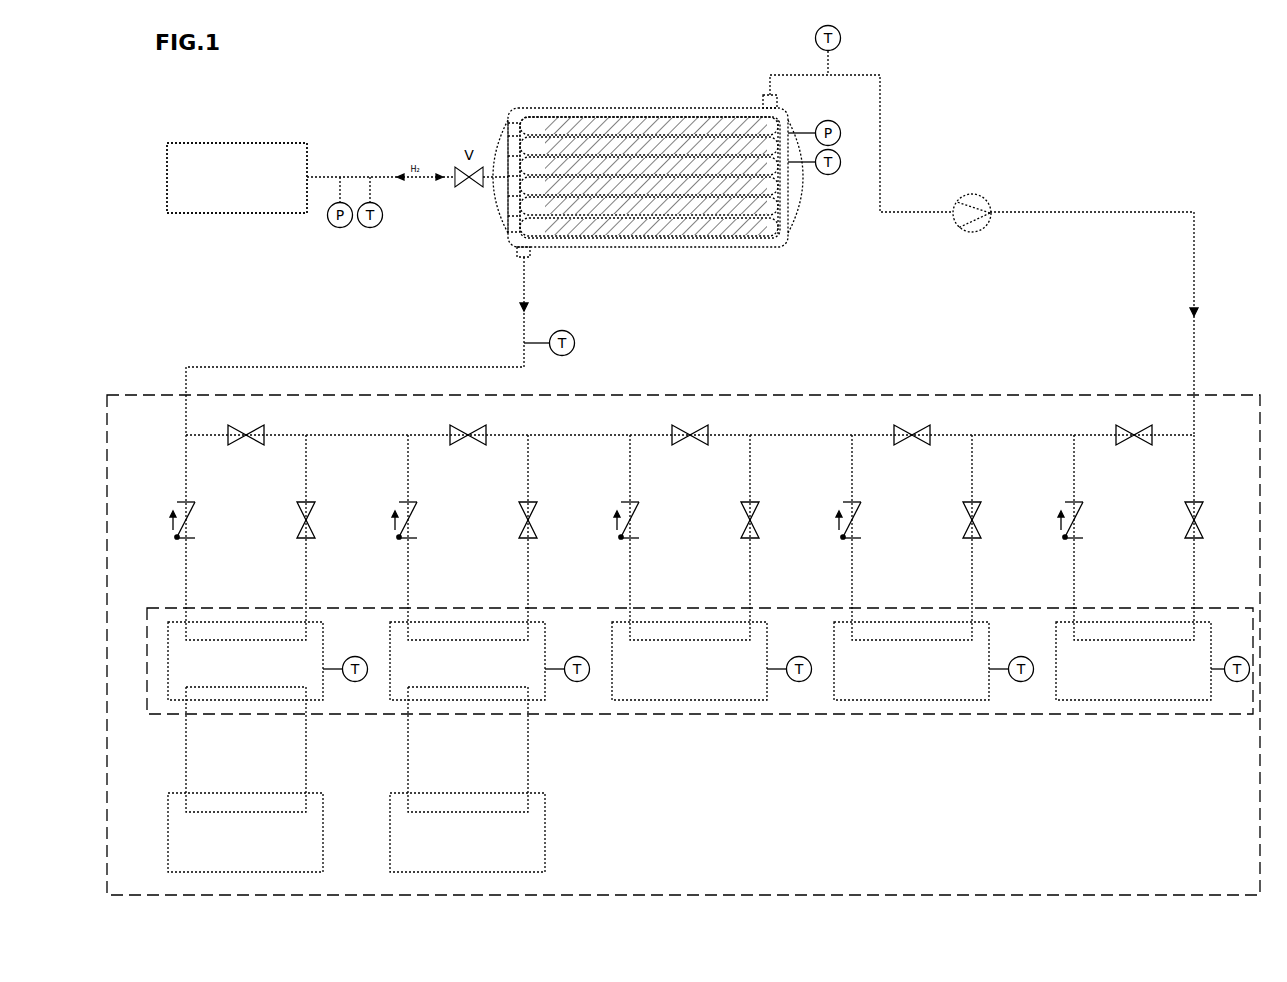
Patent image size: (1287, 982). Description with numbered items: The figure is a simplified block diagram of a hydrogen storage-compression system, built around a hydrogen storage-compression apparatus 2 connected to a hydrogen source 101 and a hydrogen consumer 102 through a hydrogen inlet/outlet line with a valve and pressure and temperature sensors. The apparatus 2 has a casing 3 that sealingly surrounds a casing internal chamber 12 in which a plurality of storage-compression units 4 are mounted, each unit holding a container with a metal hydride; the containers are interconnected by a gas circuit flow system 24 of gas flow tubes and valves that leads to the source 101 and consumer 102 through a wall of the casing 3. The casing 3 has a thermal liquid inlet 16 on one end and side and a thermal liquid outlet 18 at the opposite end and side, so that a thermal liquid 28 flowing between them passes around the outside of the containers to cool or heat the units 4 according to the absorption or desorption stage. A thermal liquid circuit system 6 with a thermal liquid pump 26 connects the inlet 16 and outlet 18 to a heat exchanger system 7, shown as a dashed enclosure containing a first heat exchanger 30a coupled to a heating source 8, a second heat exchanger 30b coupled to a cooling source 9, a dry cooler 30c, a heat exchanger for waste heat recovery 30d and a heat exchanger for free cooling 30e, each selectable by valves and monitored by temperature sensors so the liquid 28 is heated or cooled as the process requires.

The hydrogen storage-compression apparatus 2 is at (645, 169).
The casing 3 is at (750, 248).
The storage-compression unit 4 is at (809, 181).
The thermal liquid circuit system 6 is at (1142, 211).
The heat exchanger system 7 is at (683, 608).
The heating source 8 is at (552, 823).
The cooling source 9 is at (163, 824).
The casing internal chamber 12 is at (593, 243).
The thermal liquid inlet 16 is at (527, 254).
The thermal liquid outlet 18 is at (762, 100).
The gas circuit flow system 24 is at (507, 140).
The thermal liquid pump 26 is at (972, 195).
The thermal liquid 28 is at (1193, 302).
The first heat exchanger 30a is at (331, 631).
The second heat exchanger 30b is at (553, 631).
The dry cooler 30c is at (775, 631).
The heat exchanger for waste heat recovery 30d is at (997, 631).
The heat exchanger for free cooling 30e is at (1213, 631).
The hydrogen source 101 is at (266, 226).
The hydrogen consumer 102 is at (237, 178).